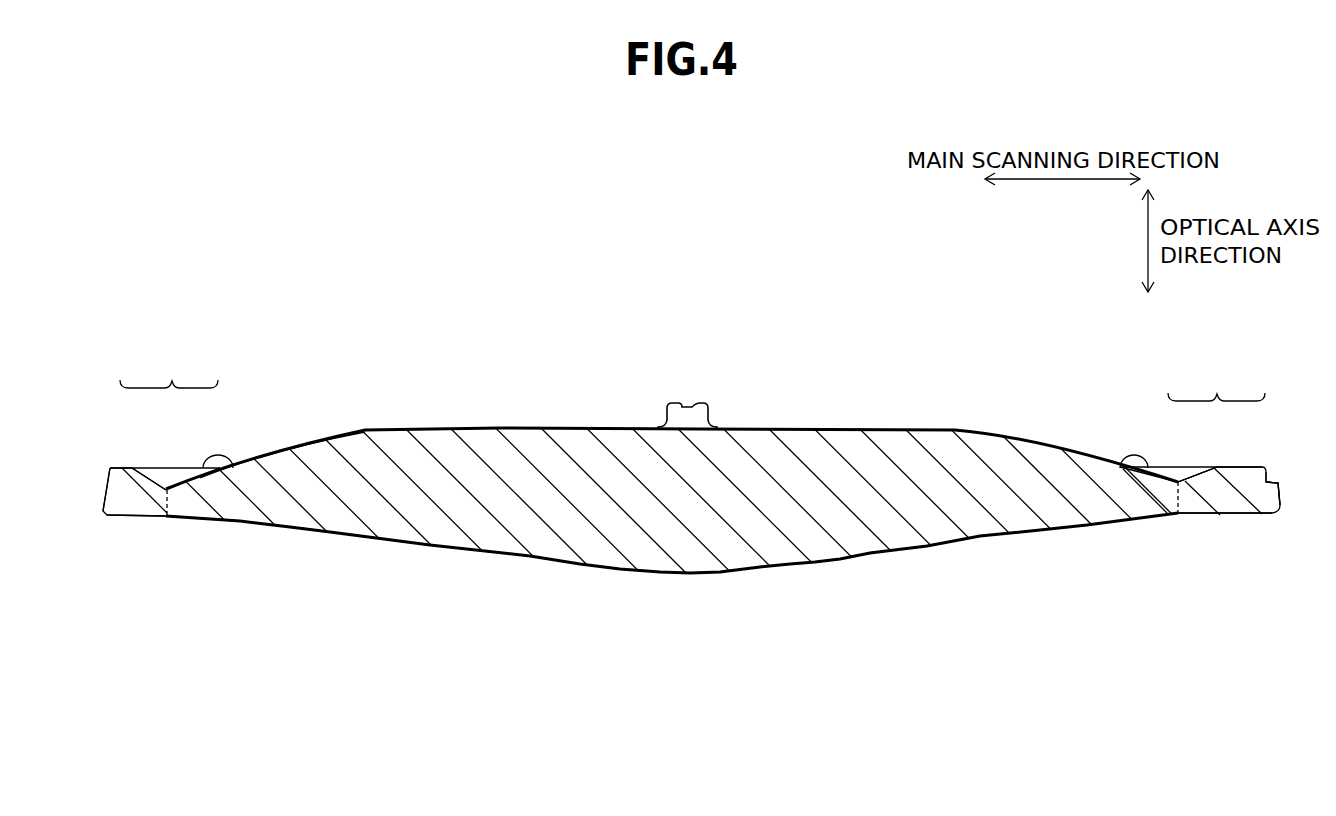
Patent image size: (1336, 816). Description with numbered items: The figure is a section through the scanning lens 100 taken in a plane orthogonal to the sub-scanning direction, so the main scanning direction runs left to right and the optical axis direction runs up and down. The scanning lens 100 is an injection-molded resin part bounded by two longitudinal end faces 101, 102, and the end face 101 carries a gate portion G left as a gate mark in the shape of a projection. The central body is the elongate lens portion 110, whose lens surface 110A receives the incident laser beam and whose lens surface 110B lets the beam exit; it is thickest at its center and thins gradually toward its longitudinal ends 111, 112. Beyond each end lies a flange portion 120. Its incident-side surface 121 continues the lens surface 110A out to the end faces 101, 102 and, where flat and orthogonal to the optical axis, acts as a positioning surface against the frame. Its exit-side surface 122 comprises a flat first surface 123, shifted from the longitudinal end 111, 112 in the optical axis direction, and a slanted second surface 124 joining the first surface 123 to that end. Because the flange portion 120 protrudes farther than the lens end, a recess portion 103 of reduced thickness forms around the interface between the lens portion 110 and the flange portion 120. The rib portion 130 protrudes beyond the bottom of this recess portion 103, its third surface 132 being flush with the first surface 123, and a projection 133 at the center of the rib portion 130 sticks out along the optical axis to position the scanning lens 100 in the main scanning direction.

The scanning lens 100 is at (887, 323).
The longitudinal end face 101 is at (1266, 473).
The longitudinal end face 102 is at (110, 470).
The recess portion 103 is at (183, 468).
The lens portion 110 is at (780, 548).
The lens surface 110A is at (693, 574).
The lens surface 110B is at (309, 443).
The longitudinal end 111 is at (1182, 527).
The longitudinal end 112 is at (156, 520).
The flange portion 120 is at (123, 498).
The incident-side surface 121 is at (138, 517).
The exit-side surface 122 is at (692, 376).
The first surface 123 is at (128, 468).
The second surface 124 is at (160, 468).
The rib portion 130 is at (1180, 462).
The third surface 132 is at (233, 468).
The projection 133 is at (688, 417).
The gate portion G is at (1283, 503).